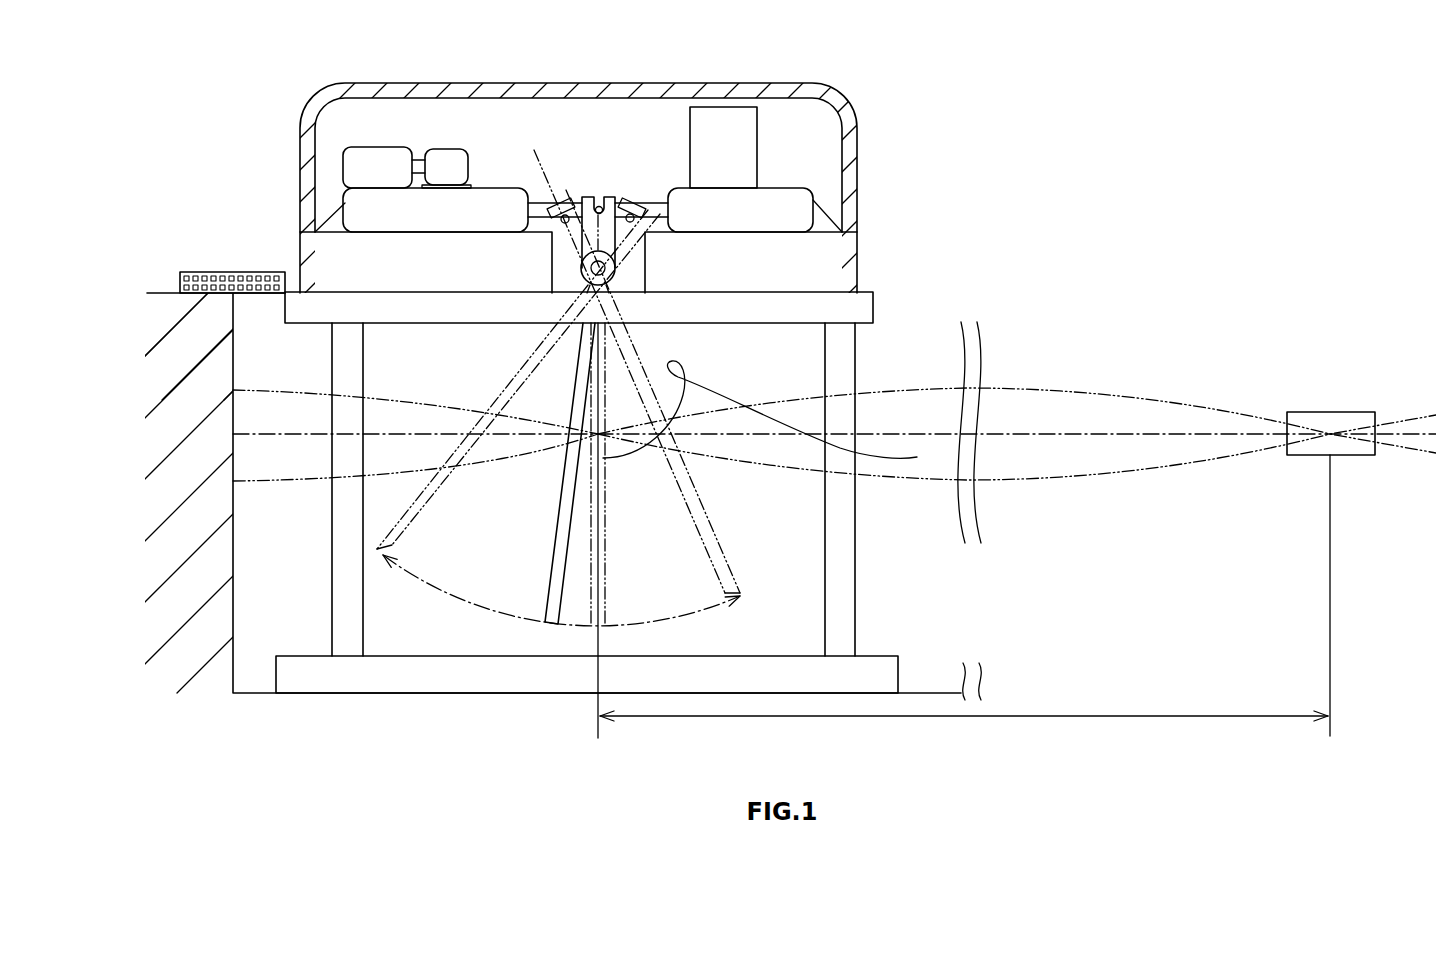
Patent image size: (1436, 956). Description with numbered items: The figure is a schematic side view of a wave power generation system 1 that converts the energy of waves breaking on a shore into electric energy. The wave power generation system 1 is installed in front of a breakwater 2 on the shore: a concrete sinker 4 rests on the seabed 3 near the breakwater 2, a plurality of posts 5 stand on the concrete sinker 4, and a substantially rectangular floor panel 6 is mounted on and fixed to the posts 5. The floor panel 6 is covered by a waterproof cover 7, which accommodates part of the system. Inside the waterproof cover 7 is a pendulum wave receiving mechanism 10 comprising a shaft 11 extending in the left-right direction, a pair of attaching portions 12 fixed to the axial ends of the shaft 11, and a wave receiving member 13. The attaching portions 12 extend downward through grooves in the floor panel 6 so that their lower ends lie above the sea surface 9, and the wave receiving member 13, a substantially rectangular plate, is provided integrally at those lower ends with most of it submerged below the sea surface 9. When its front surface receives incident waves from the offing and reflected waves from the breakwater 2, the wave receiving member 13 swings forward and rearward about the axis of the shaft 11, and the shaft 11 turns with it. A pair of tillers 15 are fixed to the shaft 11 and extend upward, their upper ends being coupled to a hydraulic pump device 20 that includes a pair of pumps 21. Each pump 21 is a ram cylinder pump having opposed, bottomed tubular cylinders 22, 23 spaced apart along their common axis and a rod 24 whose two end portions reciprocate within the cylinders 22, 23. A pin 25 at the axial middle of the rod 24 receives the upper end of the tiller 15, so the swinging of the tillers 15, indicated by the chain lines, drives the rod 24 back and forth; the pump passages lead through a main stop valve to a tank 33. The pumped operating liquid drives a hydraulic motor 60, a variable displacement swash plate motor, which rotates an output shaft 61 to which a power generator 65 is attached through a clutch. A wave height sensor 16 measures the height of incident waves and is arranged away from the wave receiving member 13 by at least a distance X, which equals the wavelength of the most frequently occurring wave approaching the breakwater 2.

The wave power generation system 1 is at (570, 172).
The breakwater 2 is at (160, 295).
The seabed 3 is at (492, 691).
The concrete sinker 4 is at (558, 690).
The posts 5 is at (343, 613).
The floor panel 6 is at (868, 308).
The waterproof cover 7 is at (852, 175).
The sea surface 9 is at (422, 428).
The wave receiving mechanism 10 is at (535, 576).
The shaft 11 is at (640, 220).
The attaching portions 12 is at (585, 365).
The wave receiving member 13 is at (420, 500).
The tillers 15 is at (599, 173).
The wave height sensor 16 is at (1331, 411).
The hydraulic pump device 20 is at (727, 193).
The pumps 21 is at (486, 242).
The cylinder 22 is at (400, 225).
The cylinder 23 is at (763, 223).
The rod 24 is at (650, 203).
The pin 25 is at (602, 195).
The tank 33 is at (755, 129).
The hydraulic motor 60 is at (372, 150).
The output shaft 61 is at (418, 160).
The power generator 65 is at (450, 150).
The distance X is at (1015, 718).